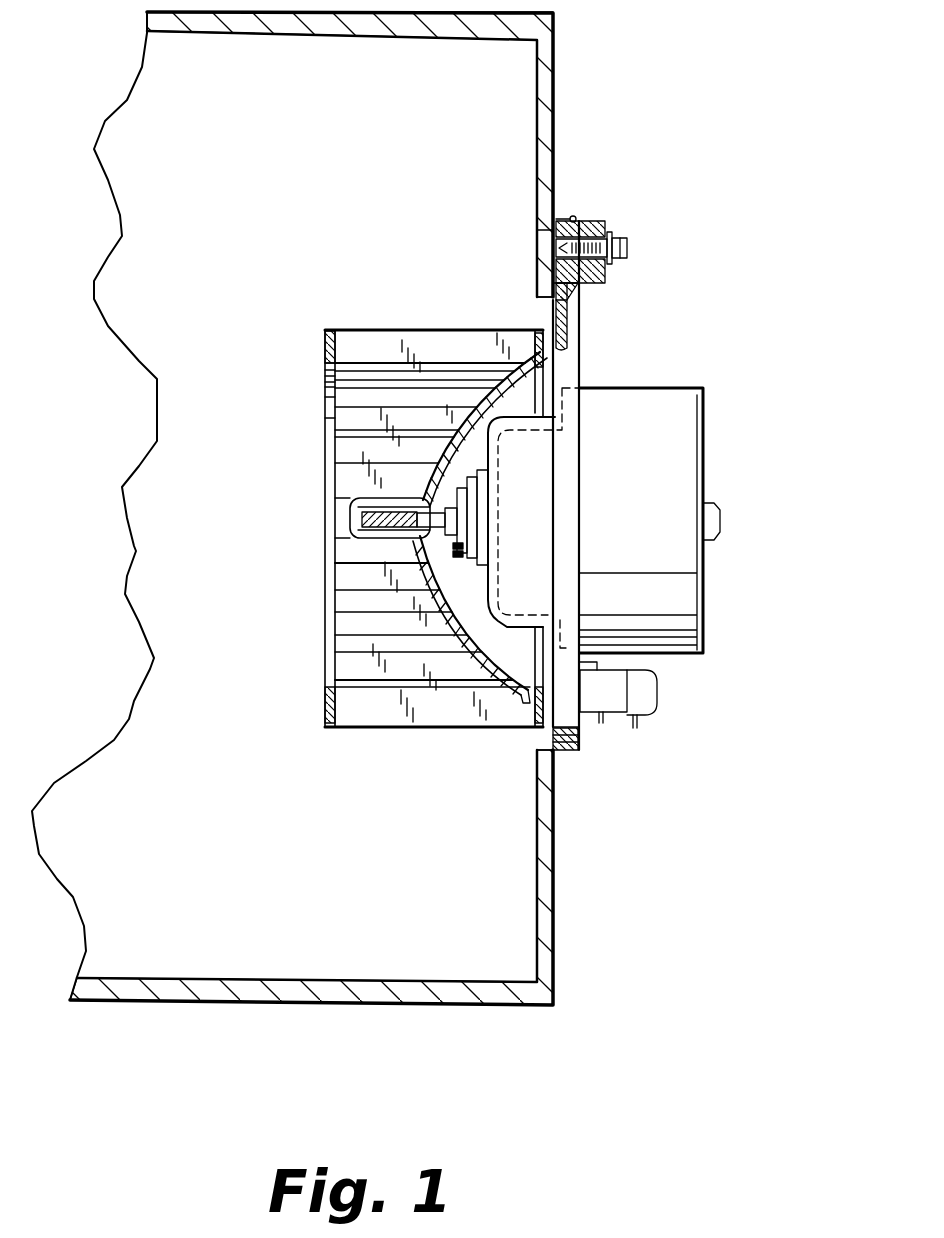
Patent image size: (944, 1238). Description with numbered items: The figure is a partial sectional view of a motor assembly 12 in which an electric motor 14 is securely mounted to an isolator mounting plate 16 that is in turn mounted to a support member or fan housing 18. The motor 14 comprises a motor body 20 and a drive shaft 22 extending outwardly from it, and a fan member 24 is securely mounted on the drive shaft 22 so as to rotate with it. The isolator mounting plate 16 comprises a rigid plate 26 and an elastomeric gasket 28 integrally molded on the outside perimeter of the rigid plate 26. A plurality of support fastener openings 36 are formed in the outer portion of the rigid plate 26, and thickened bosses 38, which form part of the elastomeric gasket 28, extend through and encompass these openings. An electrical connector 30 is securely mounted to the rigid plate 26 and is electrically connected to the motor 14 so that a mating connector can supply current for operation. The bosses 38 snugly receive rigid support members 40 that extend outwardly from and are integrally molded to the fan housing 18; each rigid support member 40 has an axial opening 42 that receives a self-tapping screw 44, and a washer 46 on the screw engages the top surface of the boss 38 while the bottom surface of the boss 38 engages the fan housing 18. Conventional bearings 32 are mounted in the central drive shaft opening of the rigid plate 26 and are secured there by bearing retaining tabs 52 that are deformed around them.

The motor assembly 12 is at (675, 800).
The electric motor 14 is at (708, 387).
The isolator mounting plate 16 is at (584, 365).
The fan housing 18 is at (417, 1005).
The motor body 20 is at (707, 580).
The drive shaft 22 is at (378, 532).
The fan member 24 is at (330, 522).
The rigid plate 26 is at (580, 332).
The elastomeric gasket 28 is at (572, 730).
The electrical connector 30 is at (658, 708).
The bearings 32 is at (453, 548).
The support fastener openings 36 is at (575, 219).
The thickened bosses 38 is at (597, 283).
The rigid support members 40 is at (592, 240).
The axial opening 42 is at (565, 221).
The self-tapping screw 44 is at (630, 249).
The washer 46 is at (610, 240).
The bearing retaining tabs 52 is at (490, 518).